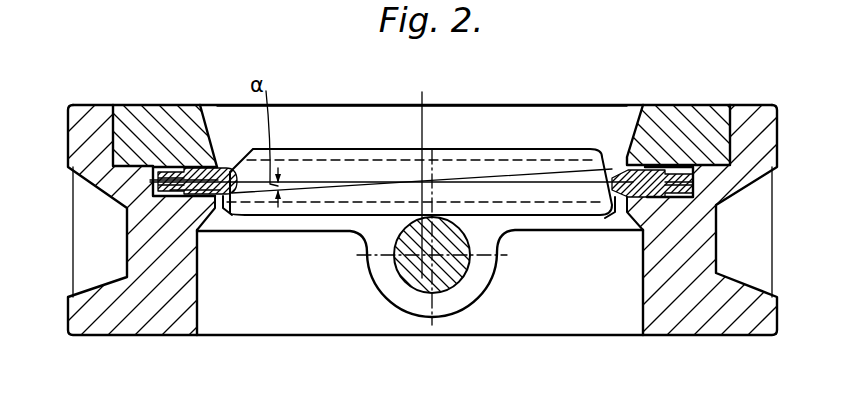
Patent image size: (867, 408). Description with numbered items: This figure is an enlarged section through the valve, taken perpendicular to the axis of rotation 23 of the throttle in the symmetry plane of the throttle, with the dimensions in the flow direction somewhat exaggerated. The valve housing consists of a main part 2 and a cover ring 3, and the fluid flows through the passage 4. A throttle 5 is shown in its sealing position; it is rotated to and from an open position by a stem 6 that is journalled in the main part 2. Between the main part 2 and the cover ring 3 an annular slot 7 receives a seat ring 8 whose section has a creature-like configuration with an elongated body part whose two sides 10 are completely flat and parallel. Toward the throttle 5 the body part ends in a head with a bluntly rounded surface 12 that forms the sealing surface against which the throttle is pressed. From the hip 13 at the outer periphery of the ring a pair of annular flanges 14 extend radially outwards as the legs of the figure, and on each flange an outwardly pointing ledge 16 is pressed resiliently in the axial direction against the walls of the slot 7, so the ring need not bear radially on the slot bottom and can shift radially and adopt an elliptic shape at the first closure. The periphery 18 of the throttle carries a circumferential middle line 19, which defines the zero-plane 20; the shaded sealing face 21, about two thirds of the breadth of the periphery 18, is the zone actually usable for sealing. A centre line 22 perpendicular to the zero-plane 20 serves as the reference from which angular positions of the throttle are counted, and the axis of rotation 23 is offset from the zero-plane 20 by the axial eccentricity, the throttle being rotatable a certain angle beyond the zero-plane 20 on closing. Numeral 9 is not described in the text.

The main part 2 is at (105, 325).
The cover ring 3 is at (157, 120).
The passage 4 is at (343, 120).
The throttle 5 is at (447, 148).
The stem 6 is at (418, 282).
The annular slot 7 is at (127, 184).
The seat ring 8 is at (219, 157).
The left support pin 9 is at (218, 212).
The sides 10 is at (207, 200).
The bluntly rounded surface 12 is at (606, 170).
The hip 13 is at (662, 165).
The annular flanges 14 is at (677, 196).
The ledge 16 is at (660, 192).
The periphery 18 is at (477, 207).
The middle line 19 is at (530, 178).
The zero-plane 20 is at (547, 182).
The sealing face 21 is at (315, 167).
The centre line 22 is at (422, 92).
The axis of rotation 23 is at (450, 277).